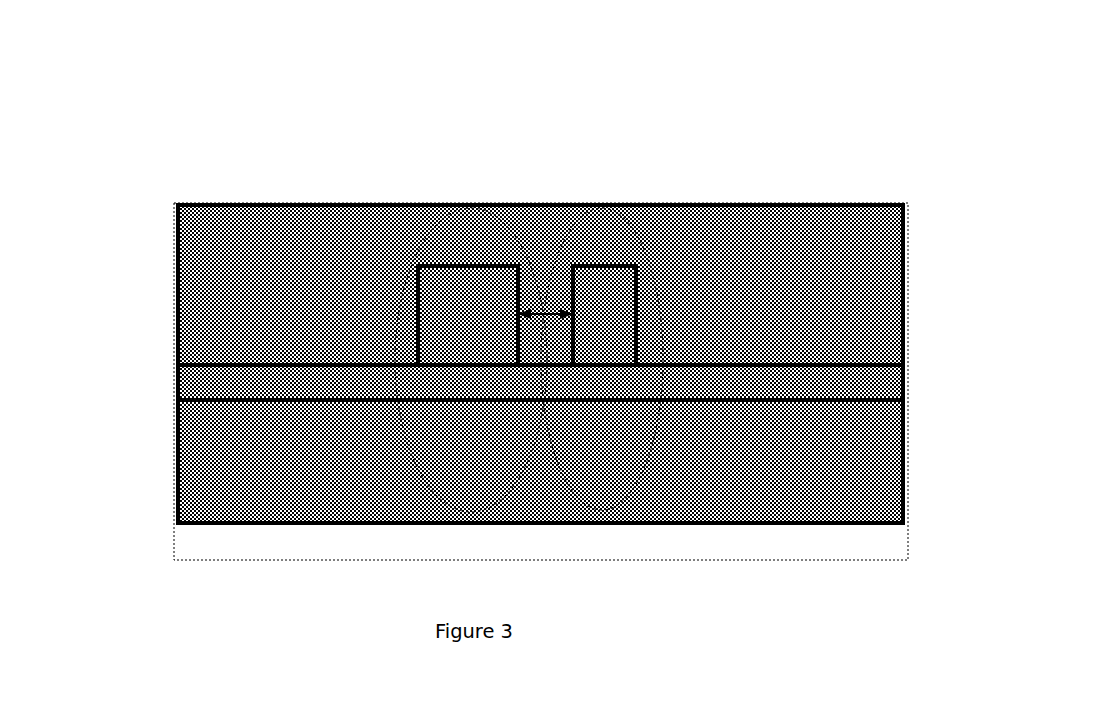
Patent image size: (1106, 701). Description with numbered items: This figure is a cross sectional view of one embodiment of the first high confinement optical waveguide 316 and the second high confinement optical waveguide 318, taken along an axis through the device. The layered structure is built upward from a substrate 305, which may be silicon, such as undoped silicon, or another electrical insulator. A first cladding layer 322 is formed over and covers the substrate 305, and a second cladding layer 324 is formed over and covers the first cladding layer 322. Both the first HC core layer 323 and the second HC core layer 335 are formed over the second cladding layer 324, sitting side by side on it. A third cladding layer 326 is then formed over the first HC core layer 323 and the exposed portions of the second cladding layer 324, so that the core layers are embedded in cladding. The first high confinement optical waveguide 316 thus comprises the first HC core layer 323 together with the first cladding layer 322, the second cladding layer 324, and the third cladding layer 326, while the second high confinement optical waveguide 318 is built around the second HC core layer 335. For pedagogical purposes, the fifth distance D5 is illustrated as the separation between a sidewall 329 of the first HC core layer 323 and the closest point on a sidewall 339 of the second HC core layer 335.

The substrate 305 is at (610, 552).
The first cladding layer 322 is at (313, 507).
The second cladding layer 324 is at (470, 392).
The third cladding layer 326 is at (313, 268).
The first high confinement optical waveguide 316 is at (662, 311).
The second high confinement optical waveguide 318 is at (428, 227).
The first HC core layer 323 is at (478, 330).
The second HC core layer 335 is at (618, 313).
The sidewall of the first HC core layer 329 is at (518, 340).
The sidewall of the second HC core layer 339 is at (572, 305).
The fifth distance D5 is at (572, 340).